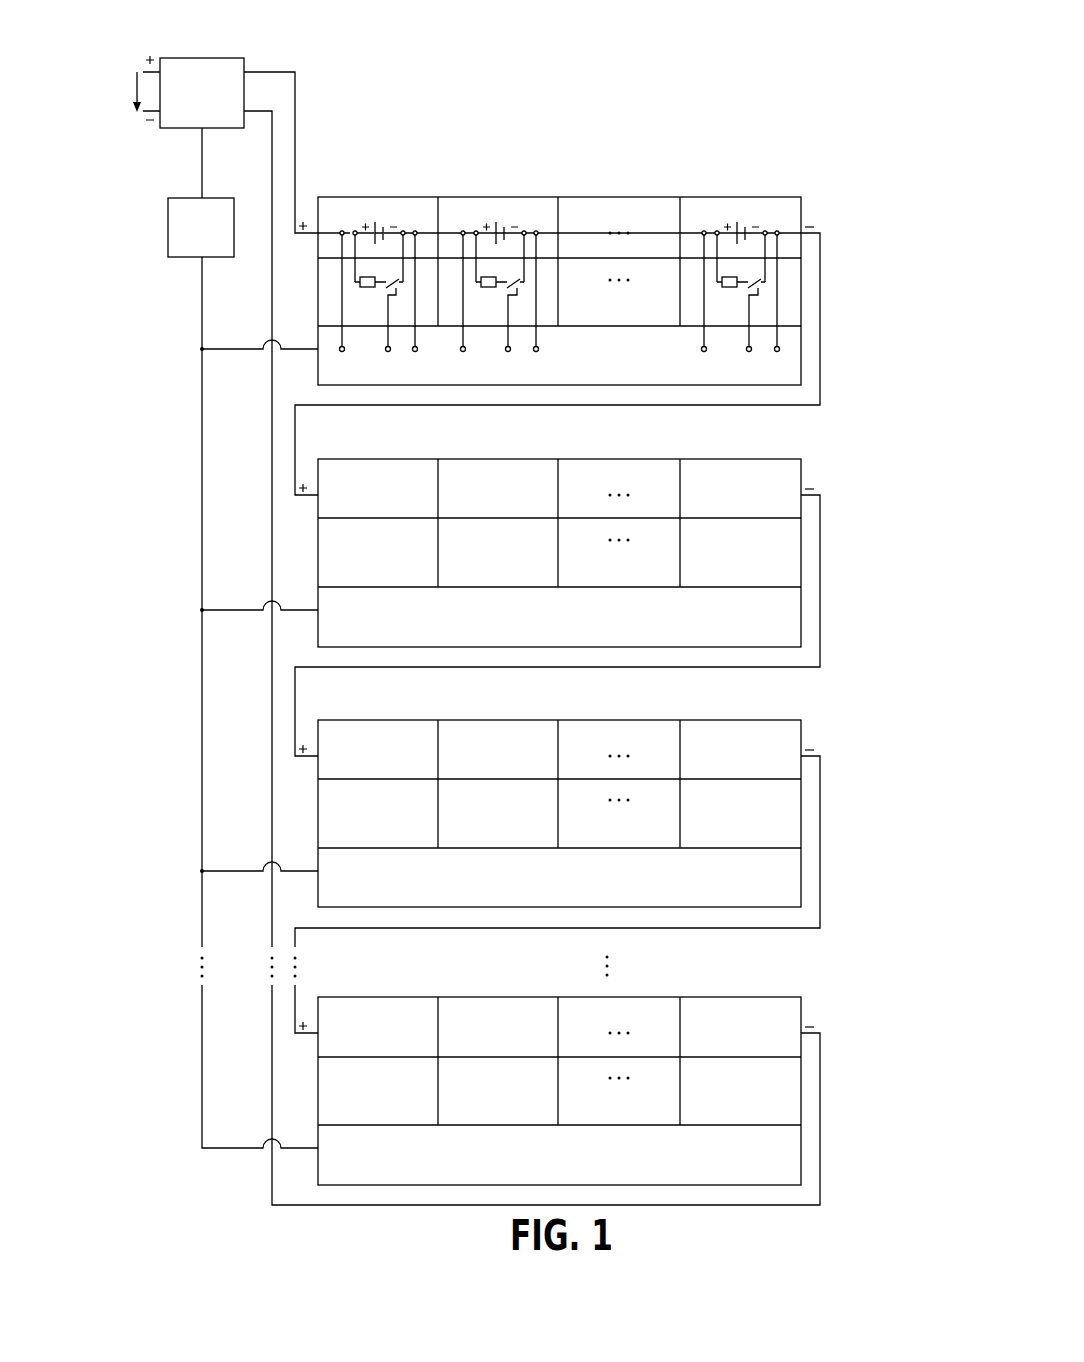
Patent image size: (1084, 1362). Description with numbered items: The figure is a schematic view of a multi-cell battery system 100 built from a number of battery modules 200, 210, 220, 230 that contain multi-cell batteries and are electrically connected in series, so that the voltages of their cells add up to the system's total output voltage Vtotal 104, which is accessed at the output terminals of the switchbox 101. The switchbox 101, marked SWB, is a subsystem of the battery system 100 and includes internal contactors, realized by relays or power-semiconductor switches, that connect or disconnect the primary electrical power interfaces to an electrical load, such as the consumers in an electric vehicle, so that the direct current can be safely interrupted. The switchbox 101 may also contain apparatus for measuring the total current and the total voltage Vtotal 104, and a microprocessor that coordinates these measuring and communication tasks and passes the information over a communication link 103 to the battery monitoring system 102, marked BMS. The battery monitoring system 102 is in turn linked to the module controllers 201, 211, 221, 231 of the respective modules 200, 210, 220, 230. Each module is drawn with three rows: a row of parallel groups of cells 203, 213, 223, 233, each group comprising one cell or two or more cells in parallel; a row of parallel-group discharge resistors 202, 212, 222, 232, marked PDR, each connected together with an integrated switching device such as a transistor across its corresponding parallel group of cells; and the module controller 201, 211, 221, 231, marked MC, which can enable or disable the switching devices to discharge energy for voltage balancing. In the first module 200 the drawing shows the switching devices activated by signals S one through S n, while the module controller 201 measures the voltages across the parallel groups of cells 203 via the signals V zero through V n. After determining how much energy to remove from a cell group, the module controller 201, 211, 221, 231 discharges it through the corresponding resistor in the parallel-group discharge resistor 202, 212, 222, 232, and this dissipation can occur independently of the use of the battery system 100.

The multi-cell battery system 100 is at (726, 108).
The switchbox 101 is at (224, 66).
The battery monitoring system 102 is at (180, 243).
The communication link 103 is at (200, 160).
The total voltage Vtotal 104 is at (124, 66).
The battery module 200 is at (604, 192).
The module controller 201 is at (788, 346).
The parallel-group discharge resistor 202 is at (788, 278).
The parallel group of cells 203 is at (788, 221).
The battery module 210 is at (604, 454).
The module controller 211 is at (788, 605).
The parallel-group discharge resistor 212 is at (788, 538).
The parallel group of cells 213 is at (788, 482).
The battery module 220 is at (604, 714).
The module controller 221 is at (788, 866).
The parallel-group discharge resistor 222 is at (788, 798).
The parallel group of cells 223 is at (788, 742).
The battery module 230 is at (634, 988).
The module controller 231 is at (788, 1145).
The parallel-group discharge resistor 232 is at (788, 1076).
The parallel group of cells 233 is at (788, 1018).